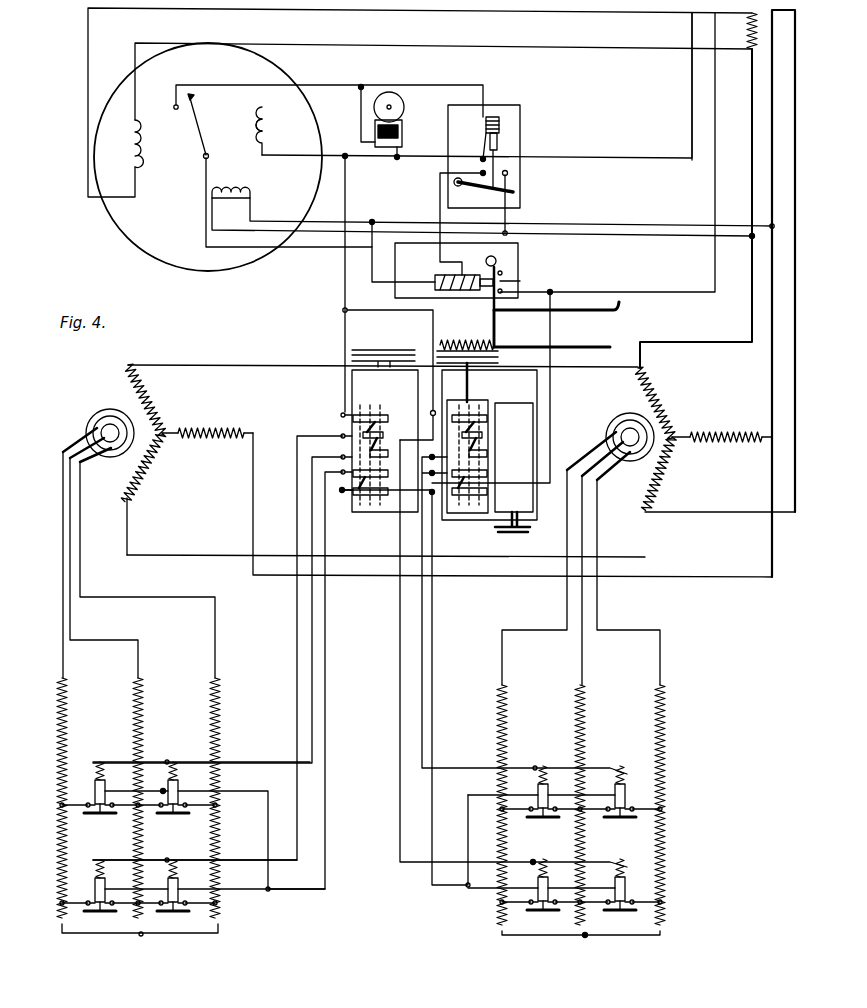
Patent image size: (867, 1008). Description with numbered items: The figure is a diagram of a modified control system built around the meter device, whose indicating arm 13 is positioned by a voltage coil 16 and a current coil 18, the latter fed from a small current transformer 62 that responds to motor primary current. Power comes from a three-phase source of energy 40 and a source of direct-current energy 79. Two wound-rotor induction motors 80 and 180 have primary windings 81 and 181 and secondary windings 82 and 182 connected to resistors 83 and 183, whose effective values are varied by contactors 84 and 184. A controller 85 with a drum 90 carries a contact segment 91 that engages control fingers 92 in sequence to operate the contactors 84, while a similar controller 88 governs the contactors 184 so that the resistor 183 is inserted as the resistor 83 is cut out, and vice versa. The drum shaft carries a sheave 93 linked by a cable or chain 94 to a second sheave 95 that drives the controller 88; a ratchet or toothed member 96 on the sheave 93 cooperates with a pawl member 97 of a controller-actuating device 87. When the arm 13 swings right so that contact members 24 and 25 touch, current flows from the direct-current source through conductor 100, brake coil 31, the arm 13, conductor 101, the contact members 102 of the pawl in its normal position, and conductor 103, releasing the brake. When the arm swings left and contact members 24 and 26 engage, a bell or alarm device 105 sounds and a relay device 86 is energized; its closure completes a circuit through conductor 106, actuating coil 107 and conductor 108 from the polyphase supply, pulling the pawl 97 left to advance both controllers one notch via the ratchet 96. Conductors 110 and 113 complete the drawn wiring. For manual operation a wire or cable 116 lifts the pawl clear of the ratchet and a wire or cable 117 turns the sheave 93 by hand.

The indicating arm 13 is at (196, 150).
The voltage coil 16 is at (226, 190).
The current coil 18 is at (130, 147).
The contact member 24 is at (194, 99).
The contact member 25 is at (262, 107).
The contact member 26 is at (162, 112).
The brake coil 31 is at (266, 141).
The three-phase source of energy 40 is at (795, 21).
The current transformer 62 is at (741, 44).
The source of direct-current energy 79 is at (712, 37).
The induction motor 80 is at (673, 548).
The primary winding 81 is at (714, 432).
The secondary winding 82 is at (616, 413).
The resistor 83 is at (552, 700).
The contactors 84 is at (543, 874).
The controller 85 is at (470, 546).
The relay device 86 is at (553, 135).
The controller-actuating device 87 is at (546, 271).
The controller 88 is at (333, 408).
The drum 90 is at (497, 412).
The contact segment 91 is at (466, 449).
The control fingers 92 is at (390, 374).
The sheave 93 is at (500, 358).
The cable or chain 94 is at (418, 350).
The second sheave 95 is at (361, 350).
The ratchet or toothed member 96 is at (466, 341).
The pawl member 97 is at (494, 328).
The conductor 100 is at (666, 158).
The conductor 101 is at (332, 249).
The contact members 102 is at (525, 282).
The conductor 103 is at (712, 208).
The bell or alarm device 105 is at (437, 135).
The conductor 106 is at (690, 238).
The actuating coil 107 is at (440, 276).
The conductor 108 is at (654, 226).
The conductor 110 is at (345, 216).
The conductor 113 is at (550, 413).
The wire or cable 116 is at (573, 308).
The wire or cable 117 is at (552, 339).
The induction motor 180 is at (56, 555).
The primary winding 181 is at (187, 439).
The secondary winding 182 is at (98, 418).
The resistor 183 is at (196, 696).
The contactors 184 is at (178, 872).